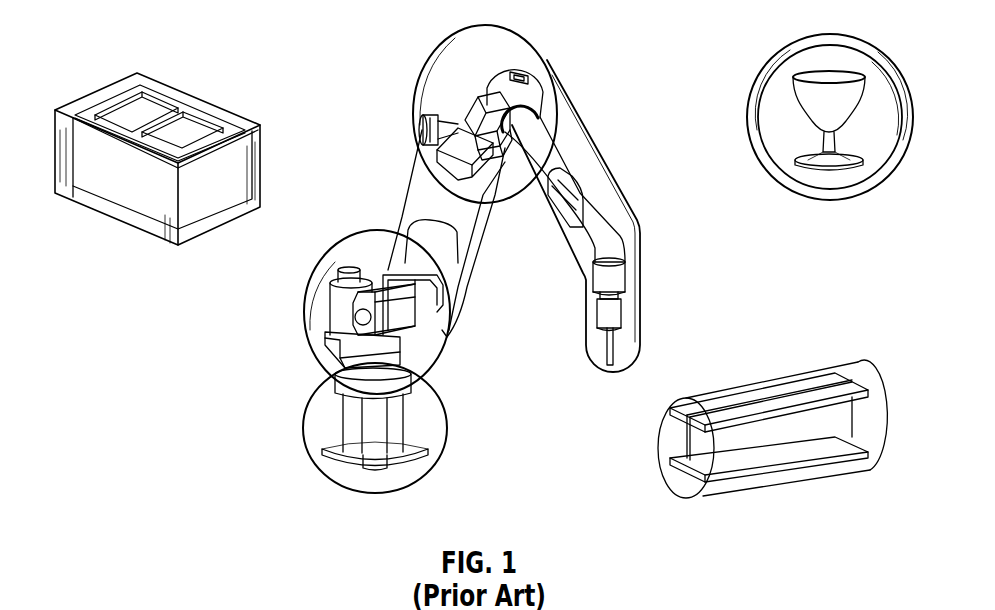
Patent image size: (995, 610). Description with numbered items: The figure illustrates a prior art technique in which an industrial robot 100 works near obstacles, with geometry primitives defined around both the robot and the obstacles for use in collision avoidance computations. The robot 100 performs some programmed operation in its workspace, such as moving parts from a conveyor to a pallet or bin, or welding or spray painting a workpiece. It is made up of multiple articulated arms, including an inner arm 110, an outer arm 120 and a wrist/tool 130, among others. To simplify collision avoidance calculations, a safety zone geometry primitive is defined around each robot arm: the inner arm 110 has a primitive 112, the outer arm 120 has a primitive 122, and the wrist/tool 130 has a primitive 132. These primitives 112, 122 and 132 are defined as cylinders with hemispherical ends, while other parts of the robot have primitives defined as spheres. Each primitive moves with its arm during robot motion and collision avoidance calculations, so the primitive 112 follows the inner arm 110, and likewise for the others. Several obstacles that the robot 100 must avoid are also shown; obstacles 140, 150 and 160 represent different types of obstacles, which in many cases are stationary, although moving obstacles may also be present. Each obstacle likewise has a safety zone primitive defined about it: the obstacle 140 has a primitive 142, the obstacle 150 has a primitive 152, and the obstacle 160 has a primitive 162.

The robot 100 is at (458, 357).
The inner arm 110 is at (472, 266).
The primitive 112 is at (420, 183).
The outer arm 120 is at (590, 204).
The primitive 122 is at (577, 123).
The wrist/tool 130 is at (614, 347).
The primitive 132 is at (584, 323).
The obstacle 140 is at (147, 203).
The primitive 142 is at (197, 98).
The obstacle 150 is at (800, 75).
The primitive 152 is at (888, 58).
The obstacle 160 is at (803, 390).
The primitive 162 is at (814, 472).